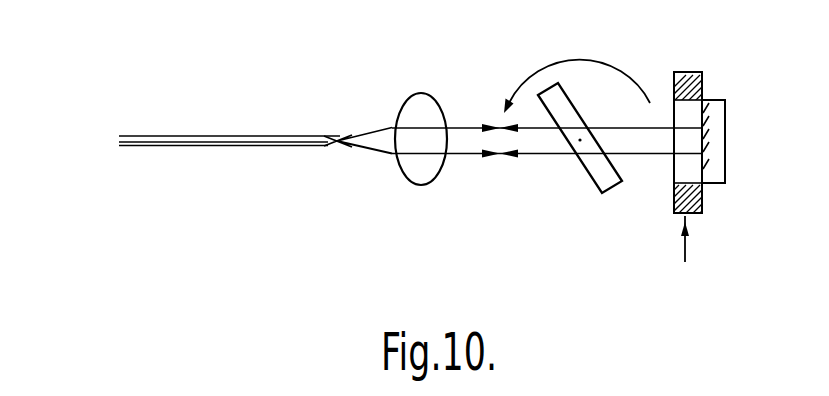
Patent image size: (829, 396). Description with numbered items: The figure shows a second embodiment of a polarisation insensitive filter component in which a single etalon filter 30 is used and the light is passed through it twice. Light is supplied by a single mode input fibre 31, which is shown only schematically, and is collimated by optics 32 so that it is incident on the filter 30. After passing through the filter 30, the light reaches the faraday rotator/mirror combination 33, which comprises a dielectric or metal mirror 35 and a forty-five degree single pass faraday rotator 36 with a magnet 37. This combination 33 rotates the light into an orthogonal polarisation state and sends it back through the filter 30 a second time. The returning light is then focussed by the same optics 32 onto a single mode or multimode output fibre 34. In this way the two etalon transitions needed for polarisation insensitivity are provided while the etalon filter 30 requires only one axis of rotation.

The filter (etalon) 30 is at (587, 175).
The single mode input fibre 31 is at (163, 135).
The optics 32 is at (402, 170).
The faraday rotator/mirror combination 33 is at (681, 255).
The output fibre 34 is at (167, 147).
The mirror 35 is at (716, 163).
The single pass faraday rotator 36 is at (690, 108).
The magnet 37 is at (700, 73).